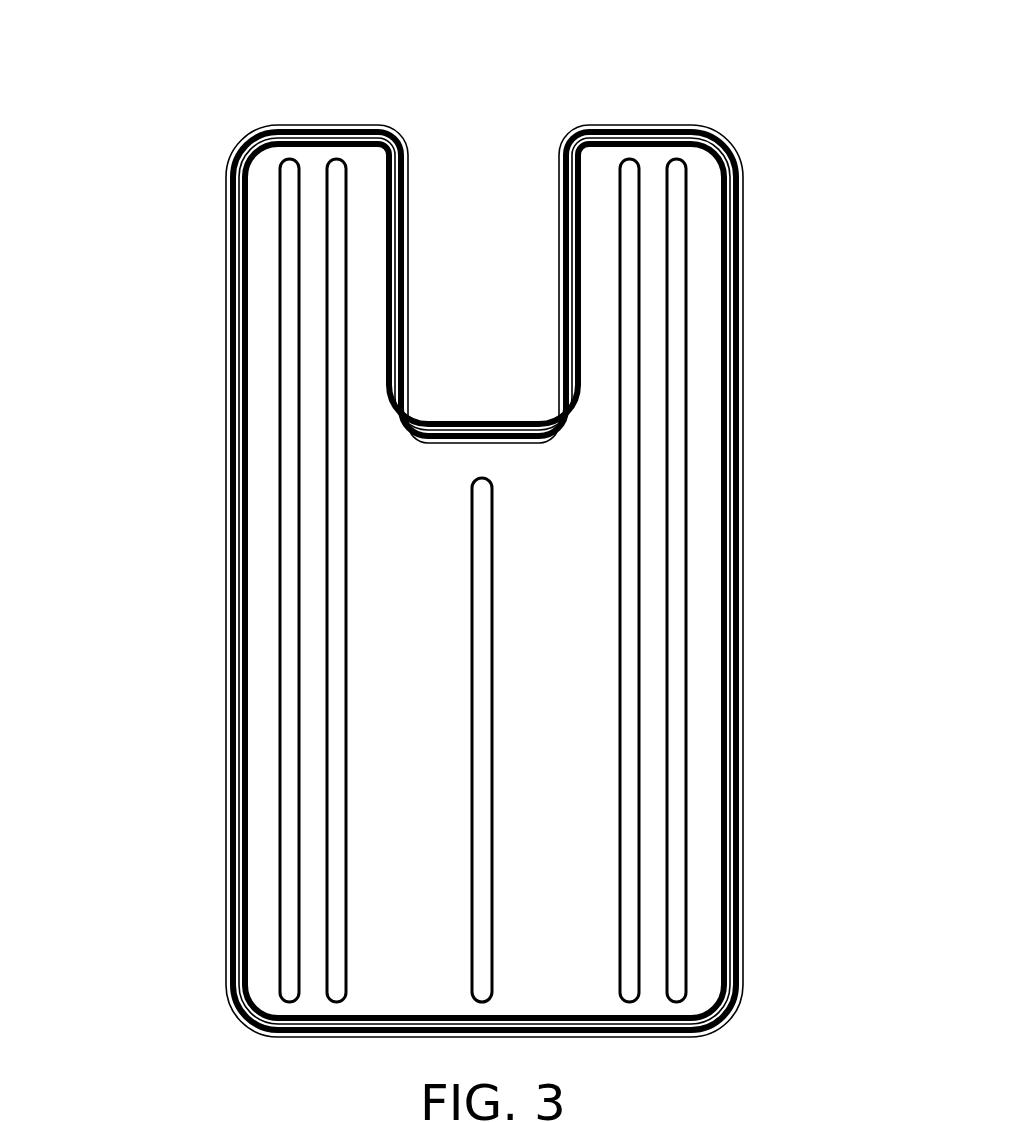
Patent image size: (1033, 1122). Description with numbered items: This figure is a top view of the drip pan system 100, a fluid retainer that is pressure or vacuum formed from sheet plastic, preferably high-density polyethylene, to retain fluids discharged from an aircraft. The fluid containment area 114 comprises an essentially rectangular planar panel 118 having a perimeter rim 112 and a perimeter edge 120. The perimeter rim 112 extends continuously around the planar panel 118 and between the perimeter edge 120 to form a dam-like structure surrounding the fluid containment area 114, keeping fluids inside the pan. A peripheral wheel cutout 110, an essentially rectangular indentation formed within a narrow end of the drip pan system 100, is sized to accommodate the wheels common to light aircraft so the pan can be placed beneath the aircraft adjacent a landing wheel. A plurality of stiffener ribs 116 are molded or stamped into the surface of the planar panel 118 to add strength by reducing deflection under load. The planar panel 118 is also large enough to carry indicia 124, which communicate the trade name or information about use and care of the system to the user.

The drip pan system 100 is at (218, 90).
The peripheral wheel cutout 110 is at (467, 220).
The perimeter rim 112 is at (740, 244).
The fluid containment area 114 is at (575, 548).
The stiffener ribs 116 is at (327, 518).
The planar panel 118 is at (558, 730).
The perimeter edge 120 is at (700, 124).
The indicia 124 is at (393, 810).